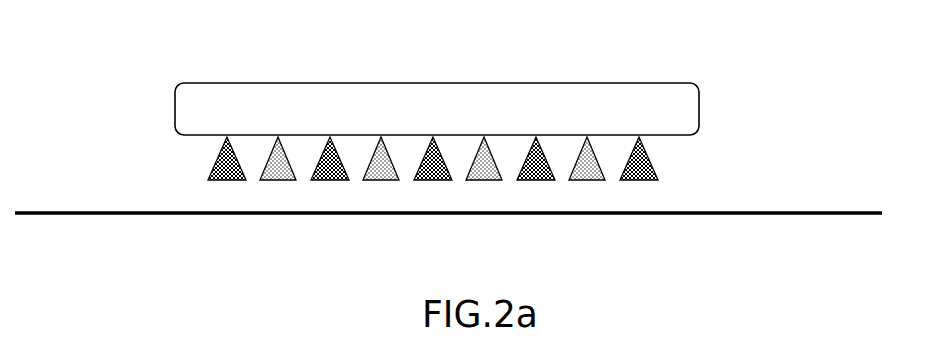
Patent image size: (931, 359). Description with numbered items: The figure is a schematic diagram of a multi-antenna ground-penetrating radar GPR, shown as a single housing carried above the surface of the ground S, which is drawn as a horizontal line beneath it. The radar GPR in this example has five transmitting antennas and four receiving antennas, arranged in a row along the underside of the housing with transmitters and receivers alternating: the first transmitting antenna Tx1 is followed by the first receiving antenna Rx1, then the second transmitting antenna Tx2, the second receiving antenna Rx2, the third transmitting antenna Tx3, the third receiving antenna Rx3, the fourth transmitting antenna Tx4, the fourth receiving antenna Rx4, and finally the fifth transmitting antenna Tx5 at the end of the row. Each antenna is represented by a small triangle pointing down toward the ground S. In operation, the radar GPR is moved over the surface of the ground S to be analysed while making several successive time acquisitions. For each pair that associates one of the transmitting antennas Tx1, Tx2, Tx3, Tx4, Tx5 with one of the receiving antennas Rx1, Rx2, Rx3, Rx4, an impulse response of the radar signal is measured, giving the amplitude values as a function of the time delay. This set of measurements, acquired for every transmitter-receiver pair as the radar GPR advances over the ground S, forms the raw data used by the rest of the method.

The ground-penetrating radar GPR is at (583, 83).
The surface of the ground S is at (107, 212).
The transmitting antenna Tx1 is at (227, 146).
The receiving antenna Rx1 is at (278, 146).
The transmitting antenna Tx2 is at (330, 146).
The receiving antenna Rx2 is at (381, 146).
The transmitting antenna Tx3 is at (433, 146).
The receiving antenna Rx3 is at (484, 146).
The transmitting antenna Tx4 is at (536, 146).
The receiving antenna Rx4 is at (587, 146).
The transmitting antenna Tx5 is at (639, 146).